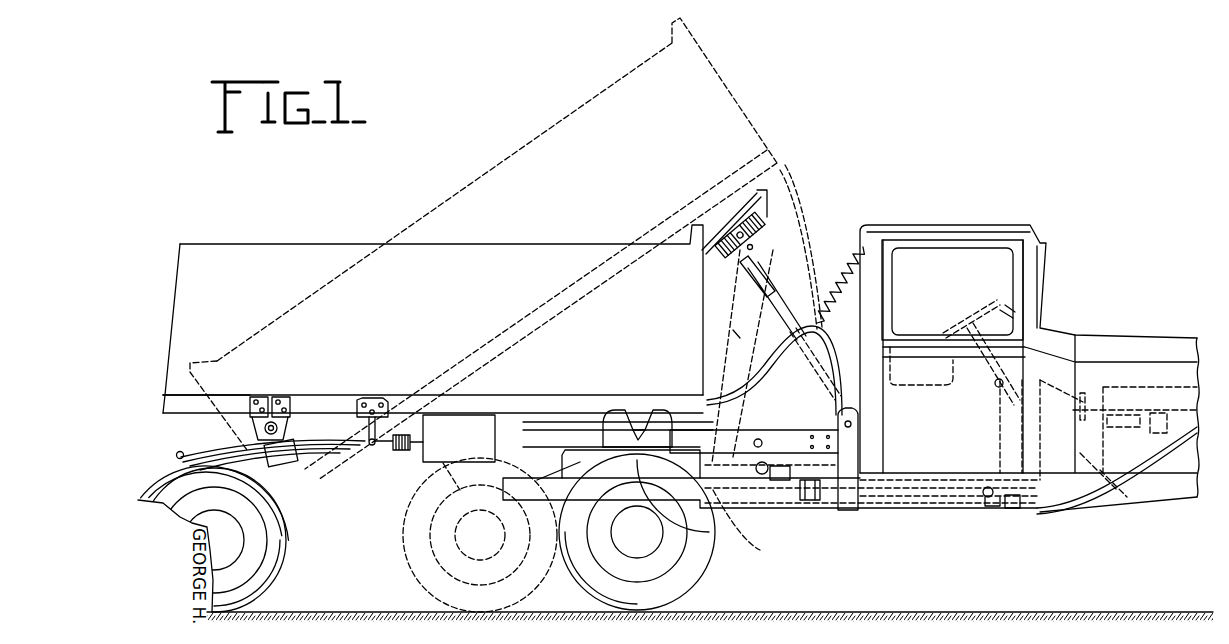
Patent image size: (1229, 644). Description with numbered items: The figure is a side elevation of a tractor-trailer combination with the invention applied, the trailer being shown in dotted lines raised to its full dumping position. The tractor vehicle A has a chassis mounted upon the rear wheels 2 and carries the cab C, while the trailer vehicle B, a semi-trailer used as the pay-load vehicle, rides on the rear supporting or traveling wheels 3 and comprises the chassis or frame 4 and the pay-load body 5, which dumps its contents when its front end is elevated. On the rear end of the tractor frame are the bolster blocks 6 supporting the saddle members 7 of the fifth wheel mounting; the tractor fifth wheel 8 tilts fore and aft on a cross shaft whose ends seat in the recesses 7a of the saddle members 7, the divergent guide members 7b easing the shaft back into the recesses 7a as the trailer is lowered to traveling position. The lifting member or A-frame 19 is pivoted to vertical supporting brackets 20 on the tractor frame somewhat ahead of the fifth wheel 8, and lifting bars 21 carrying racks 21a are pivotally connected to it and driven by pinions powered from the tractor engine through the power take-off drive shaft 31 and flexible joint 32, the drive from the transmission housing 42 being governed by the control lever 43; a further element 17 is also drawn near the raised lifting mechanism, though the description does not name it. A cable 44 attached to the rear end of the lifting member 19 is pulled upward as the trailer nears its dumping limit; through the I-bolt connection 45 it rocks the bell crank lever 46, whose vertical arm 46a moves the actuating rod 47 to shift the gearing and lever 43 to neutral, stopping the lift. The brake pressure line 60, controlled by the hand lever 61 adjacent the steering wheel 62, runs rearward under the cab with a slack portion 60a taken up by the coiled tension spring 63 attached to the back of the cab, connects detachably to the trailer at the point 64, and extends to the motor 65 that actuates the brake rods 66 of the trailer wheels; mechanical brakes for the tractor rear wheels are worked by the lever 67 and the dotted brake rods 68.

The rear wheels 2 is at (713, 563).
The rear supporting or traveling wheels 3 is at (277, 536).
The chassis or frame 4 is at (405, 400).
The pay-load body 5 is at (503, 248).
The bolster blocks 6 is at (560, 463).
The saddle members 7 is at (587, 433).
The recesses 7a is at (650, 417).
The divergent guide members 7b is at (630, 410).
The tractor fifth wheel 8 is at (636, 420).
The hydraulic cylinder 17 is at (754, 250).
The lifting member or A-frame 19 is at (782, 300).
The vertical supporting brackets 20 is at (852, 447).
The lifting bars 21 is at (752, 402).
The racks 21a is at (822, 350).
The power take-off drive shaft 31 is at (928, 513).
The flexible joint 32 is at (802, 510).
The transmission housing 42 is at (1010, 510).
The control lever 43 is at (995, 412).
The cable 44 is at (733, 330).
The I-bolt connection 45 is at (700, 468).
The bell crank lever 46 is at (742, 507).
The vertical arm 46a is at (760, 503).
The actuating rod 47 is at (968, 486).
The brake pressure line 60 is at (1118, 482).
The slack portion 60a is at (822, 330).
The hand lever 61 is at (995, 303).
The steering wheel 62 is at (950, 328).
The coiled tension spring 63 is at (841, 287).
The point 64 is at (787, 160).
The motor 65 is at (453, 413).
The brake rods 66 is at (210, 457).
The lever 67 is at (1078, 412).
The brake rods 68 is at (667, 503).
The tractor vehicle A is at (1080, 505).
The trailer vehicle B is at (190, 416).
The cab C is at (1033, 320).